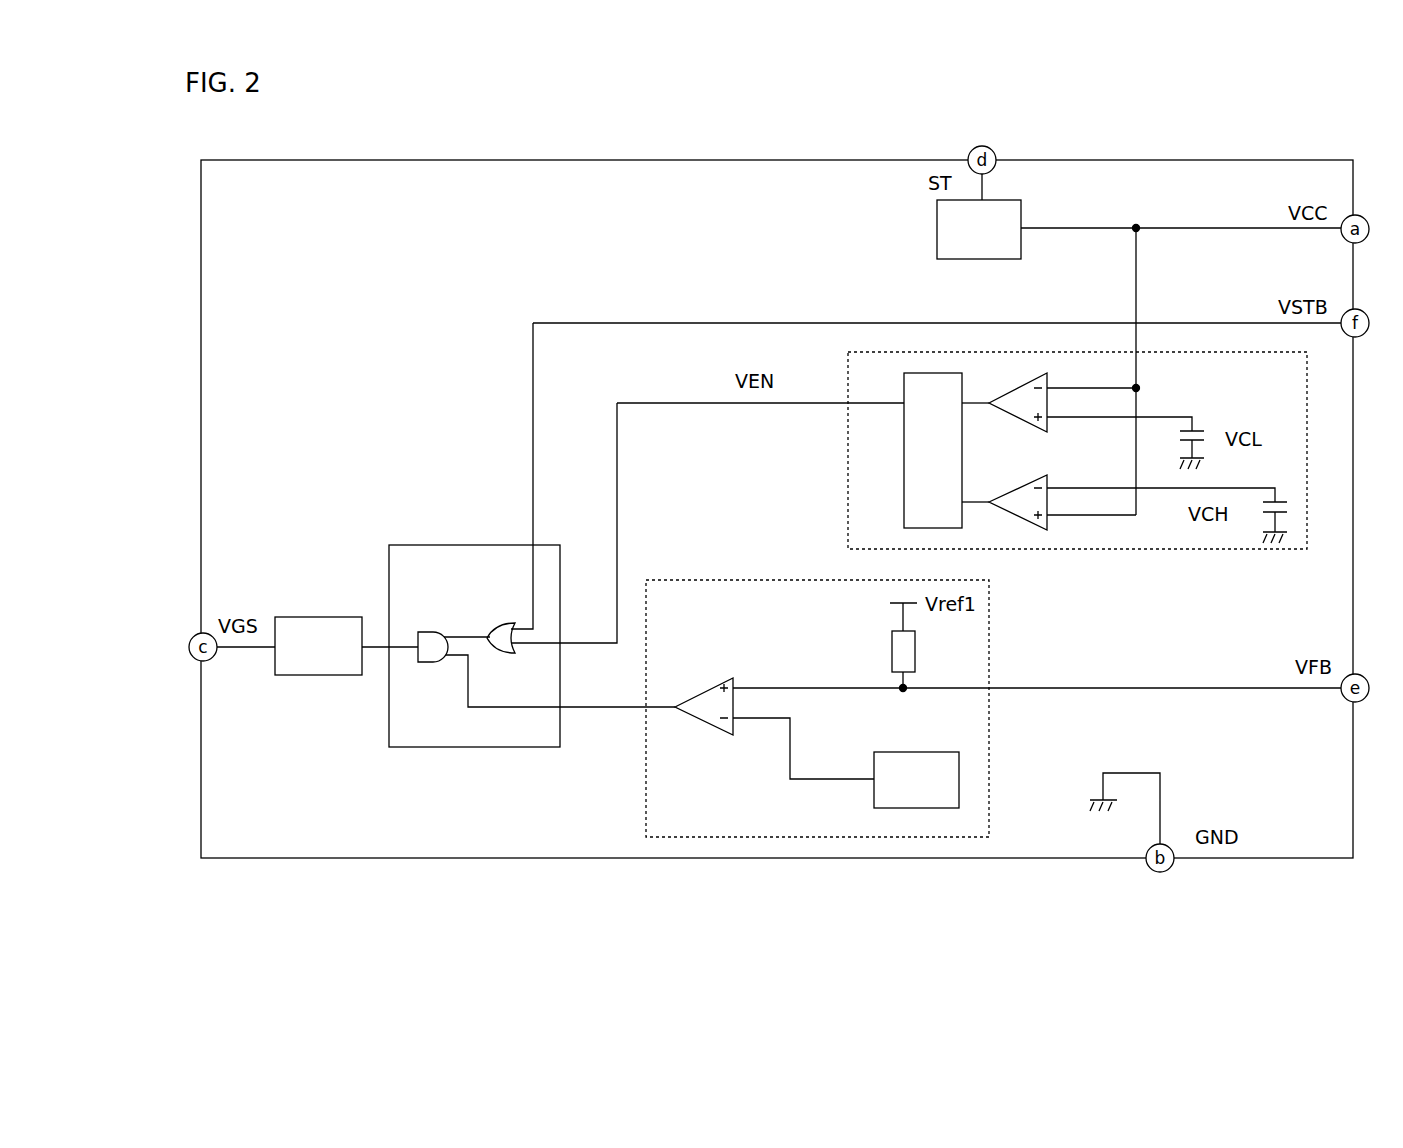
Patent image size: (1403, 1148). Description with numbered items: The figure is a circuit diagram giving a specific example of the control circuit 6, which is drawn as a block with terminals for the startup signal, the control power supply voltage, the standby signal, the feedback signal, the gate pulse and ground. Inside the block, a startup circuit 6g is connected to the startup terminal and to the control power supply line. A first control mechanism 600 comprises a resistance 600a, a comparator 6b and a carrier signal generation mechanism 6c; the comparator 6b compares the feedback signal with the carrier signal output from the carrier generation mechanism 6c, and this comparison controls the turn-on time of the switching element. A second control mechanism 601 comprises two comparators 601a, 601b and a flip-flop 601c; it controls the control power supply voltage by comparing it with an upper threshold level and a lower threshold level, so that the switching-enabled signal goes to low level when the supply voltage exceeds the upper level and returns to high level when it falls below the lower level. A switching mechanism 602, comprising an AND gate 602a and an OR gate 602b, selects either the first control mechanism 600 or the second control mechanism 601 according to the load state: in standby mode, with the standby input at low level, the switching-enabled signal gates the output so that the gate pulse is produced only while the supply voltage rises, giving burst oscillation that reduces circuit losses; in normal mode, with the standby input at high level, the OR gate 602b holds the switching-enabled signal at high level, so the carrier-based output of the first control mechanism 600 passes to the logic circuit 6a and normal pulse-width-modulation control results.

The control circuit 6 is at (345, 866).
The logic circuit 6a is at (333, 610).
The comparator 6b is at (703, 737).
The carrier signal generation mechanism 6c is at (895, 750).
The startup circuit 6g is at (928, 243).
The first control mechanism 600 is at (990, 592).
The resistance 600a is at (890, 650).
The second control mechanism 601 is at (1125, 550).
The comparator 601a is at (1018, 388).
The comparator 601b is at (1018, 488).
The flip-flop 601c is at (888, 482).
The switching mechanism 602 is at (475, 538).
The AND gate 602a is at (432, 625).
The OR gate 602b is at (500, 625).